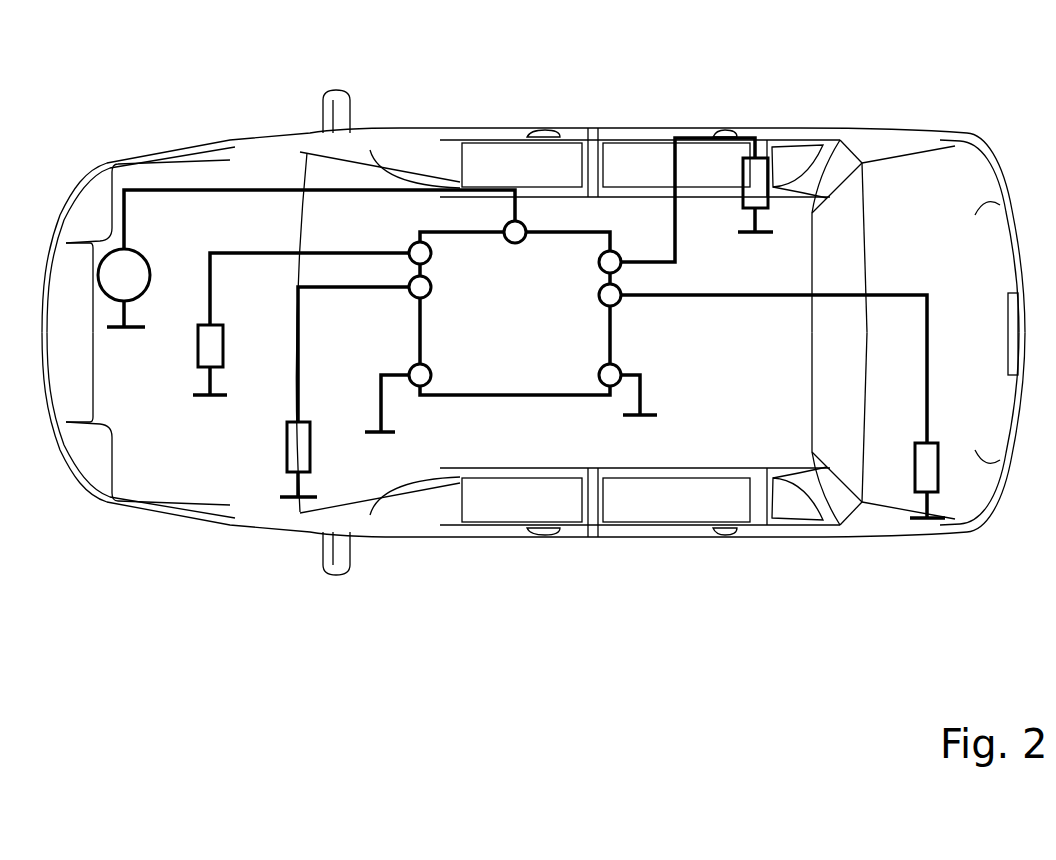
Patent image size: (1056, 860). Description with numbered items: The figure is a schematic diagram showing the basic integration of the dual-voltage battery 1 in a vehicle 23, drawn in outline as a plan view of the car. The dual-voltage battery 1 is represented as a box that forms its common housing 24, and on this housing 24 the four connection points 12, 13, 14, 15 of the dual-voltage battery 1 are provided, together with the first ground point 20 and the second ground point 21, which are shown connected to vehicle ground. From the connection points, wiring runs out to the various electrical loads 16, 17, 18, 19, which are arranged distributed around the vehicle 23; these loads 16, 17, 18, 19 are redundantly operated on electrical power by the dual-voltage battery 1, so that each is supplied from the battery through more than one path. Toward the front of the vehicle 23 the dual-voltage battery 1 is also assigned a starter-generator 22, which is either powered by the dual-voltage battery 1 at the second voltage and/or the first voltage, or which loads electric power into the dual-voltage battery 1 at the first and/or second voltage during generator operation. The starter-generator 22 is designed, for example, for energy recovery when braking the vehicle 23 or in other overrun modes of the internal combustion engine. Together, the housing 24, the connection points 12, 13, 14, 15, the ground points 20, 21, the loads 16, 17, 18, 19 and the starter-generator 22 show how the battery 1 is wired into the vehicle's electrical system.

The dual-voltage battery 1 is at (507, 336).
The connection point 12 is at (613, 253).
The connection point 13 is at (615, 302).
The connection point 14 is at (418, 243).
The connection point 15 is at (417, 292).
The electrical load 16 is at (755, 175).
The electrical load 17 is at (920, 472).
The electrical load 18 is at (203, 347).
The electrical load 19 is at (290, 450).
The first ground point 20 is at (605, 387).
The second ground point 21 is at (424, 384).
The starter-generator 22 is at (110, 288).
The vehicle 23 is at (885, 118).
The common housing 24 is at (517, 404).